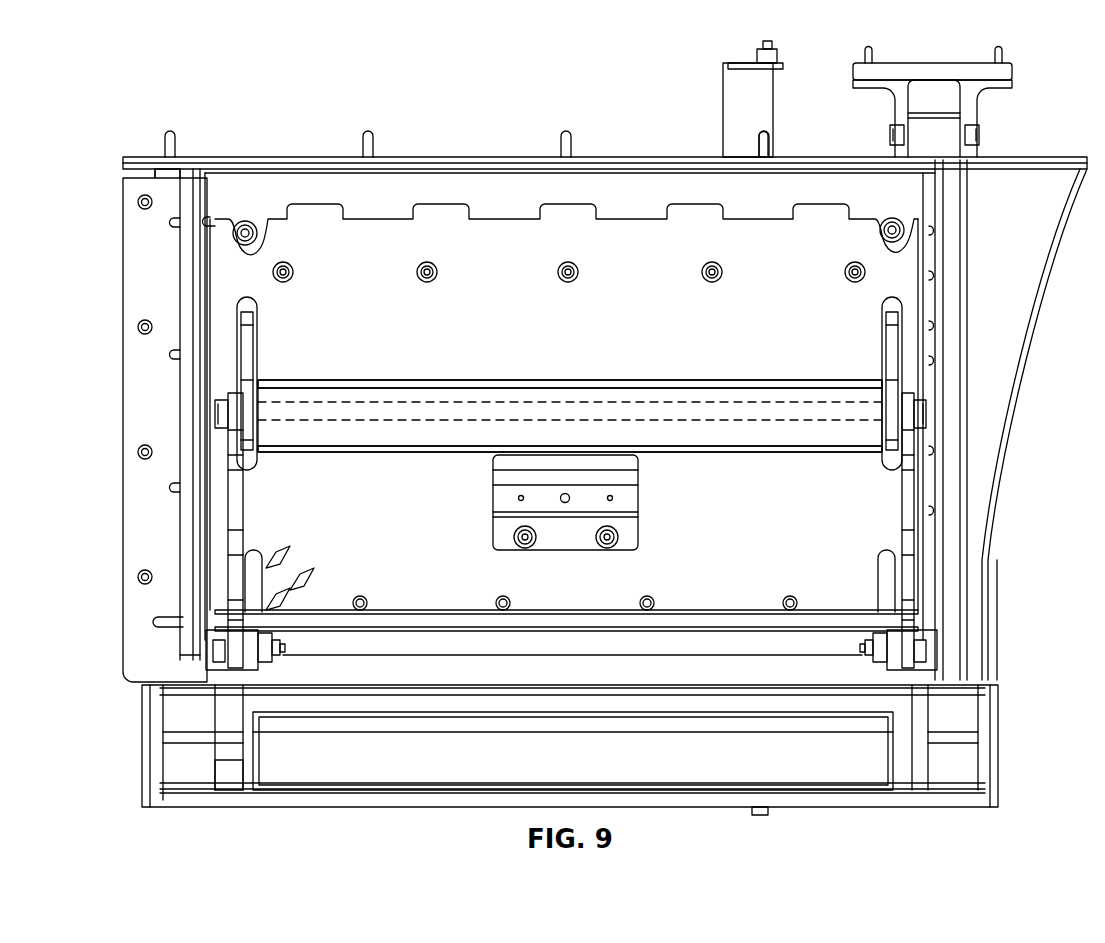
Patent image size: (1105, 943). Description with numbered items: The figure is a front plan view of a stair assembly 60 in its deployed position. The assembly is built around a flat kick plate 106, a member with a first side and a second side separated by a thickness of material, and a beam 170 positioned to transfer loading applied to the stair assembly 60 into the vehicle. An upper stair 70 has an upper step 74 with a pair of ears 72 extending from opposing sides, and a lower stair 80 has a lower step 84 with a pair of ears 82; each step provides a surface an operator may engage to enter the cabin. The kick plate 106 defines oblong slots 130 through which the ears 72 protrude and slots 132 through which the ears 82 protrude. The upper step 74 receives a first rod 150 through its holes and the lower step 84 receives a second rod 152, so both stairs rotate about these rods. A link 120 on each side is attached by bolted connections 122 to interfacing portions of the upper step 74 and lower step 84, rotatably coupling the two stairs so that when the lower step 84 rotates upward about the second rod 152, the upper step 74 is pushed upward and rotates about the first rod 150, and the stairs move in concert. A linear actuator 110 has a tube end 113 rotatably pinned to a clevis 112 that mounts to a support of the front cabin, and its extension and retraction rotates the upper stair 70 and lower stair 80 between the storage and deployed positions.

The stair assembly 60 is at (107, 85).
The upper stair 70 is at (660, 380).
The ear 72 is at (247, 343).
The upper step 74 is at (413, 432).
The lower stair 80 is at (713, 712).
The ear 82 is at (247, 583).
The lower step 84 is at (355, 770).
The kick plate 106 is at (590, 327).
The linear actuator 110 is at (937, 136).
The clevis 112 is at (927, 70).
The tube end 113 is at (903, 135).
The link 120 is at (235, 515).
The bolted connection 122 is at (905, 520).
The slot 130 is at (234, 306).
The slot 132 is at (257, 592).
The first rod 150 is at (465, 410).
The second rod 152 is at (430, 638).
The beam 170 is at (738, 93).